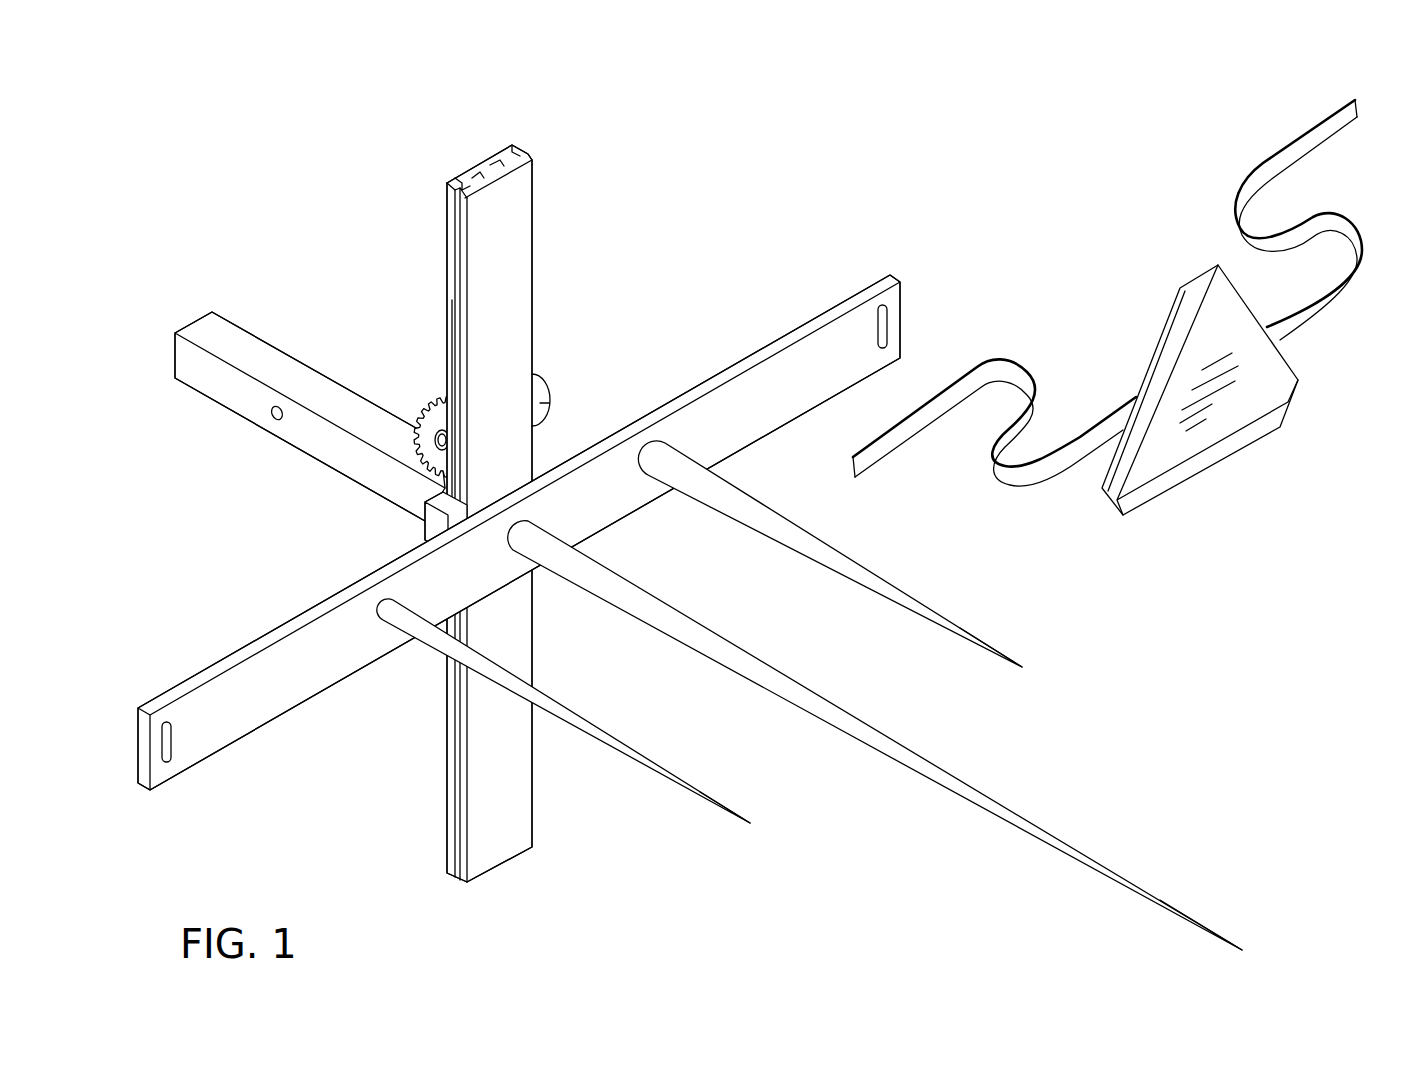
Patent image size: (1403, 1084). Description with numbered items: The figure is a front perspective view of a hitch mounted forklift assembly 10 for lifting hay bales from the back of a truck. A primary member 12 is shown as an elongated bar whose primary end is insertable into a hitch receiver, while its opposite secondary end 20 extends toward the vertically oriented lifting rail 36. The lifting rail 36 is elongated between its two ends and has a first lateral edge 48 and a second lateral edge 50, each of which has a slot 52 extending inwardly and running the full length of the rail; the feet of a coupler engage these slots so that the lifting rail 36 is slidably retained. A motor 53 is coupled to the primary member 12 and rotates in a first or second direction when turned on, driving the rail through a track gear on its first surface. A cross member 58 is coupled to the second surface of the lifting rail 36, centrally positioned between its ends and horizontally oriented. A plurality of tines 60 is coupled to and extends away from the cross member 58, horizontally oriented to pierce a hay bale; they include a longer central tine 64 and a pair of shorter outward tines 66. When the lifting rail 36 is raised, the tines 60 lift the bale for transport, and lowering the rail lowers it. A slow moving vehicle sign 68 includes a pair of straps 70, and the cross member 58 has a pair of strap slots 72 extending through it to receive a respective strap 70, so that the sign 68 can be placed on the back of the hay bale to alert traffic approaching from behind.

The hitch mounted forklift assembly 10 is at (799, 143).
The primary member 12 is at (247, 327).
The secondary end 20 is at (453, 295).
The lifting rail 36 is at (449, 182).
The first lateral edge 48 is at (473, 465).
The second lateral edge 50 is at (445, 226).
The slot 52 is at (525, 143).
The motor 53 is at (548, 403).
The cross member 58 is at (559, 529).
The tines 60 is at (809, 695).
The central tine 64 is at (828, 745).
The outward tines 66 is at (933, 588).
The slow moving vehicle sign 68 is at (1202, 273).
The straps 70 is at (1020, 370).
The strap slots 72 is at (180, 745).